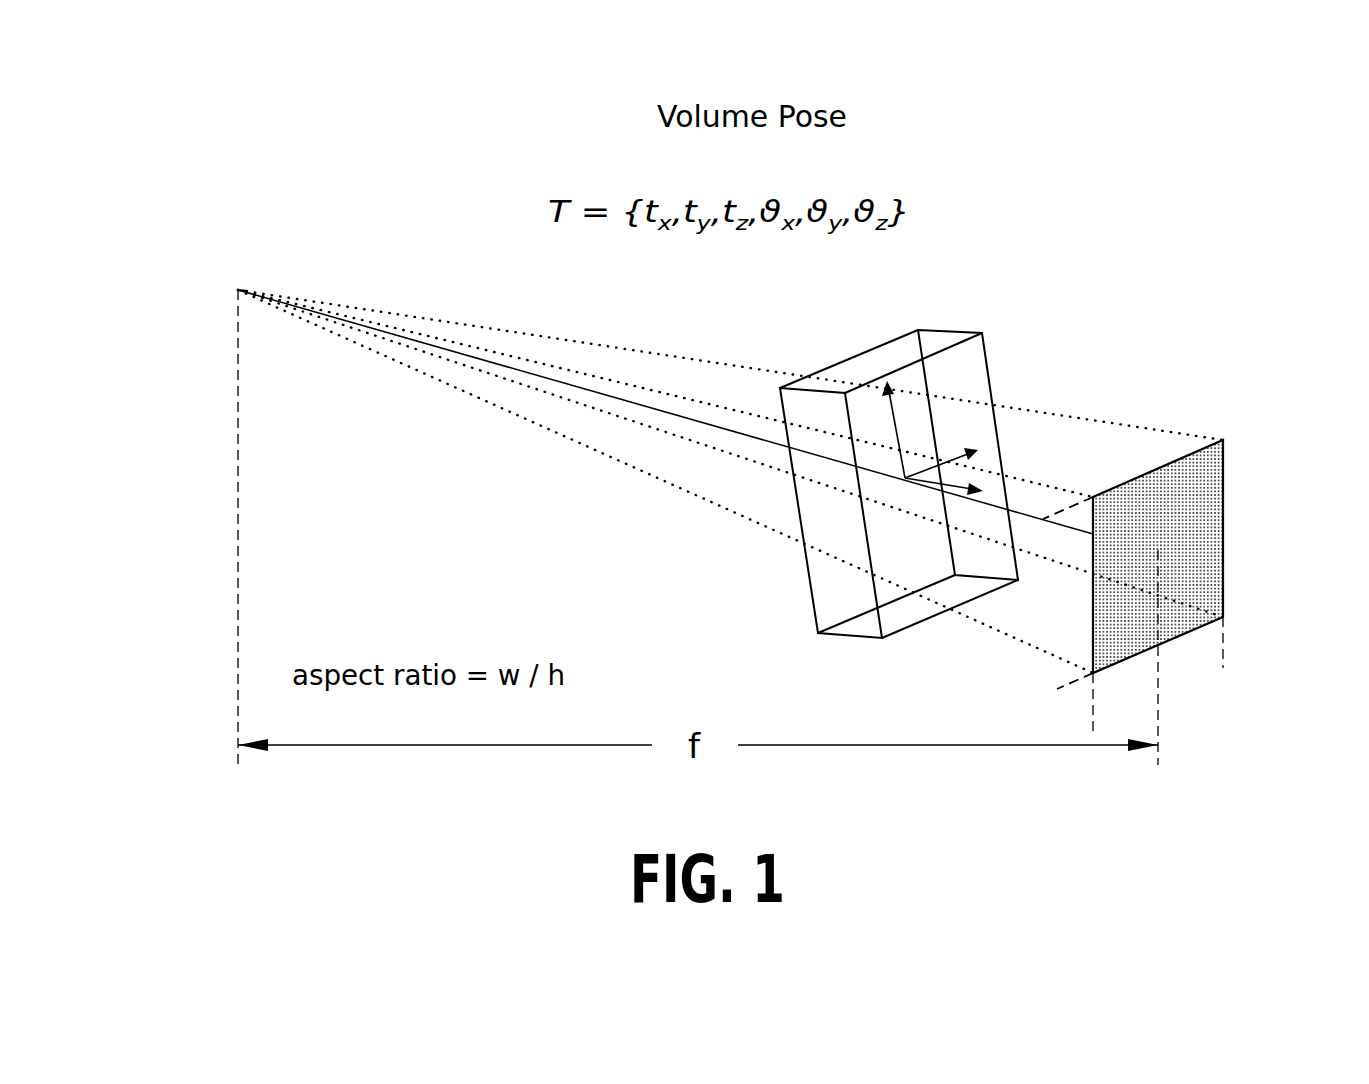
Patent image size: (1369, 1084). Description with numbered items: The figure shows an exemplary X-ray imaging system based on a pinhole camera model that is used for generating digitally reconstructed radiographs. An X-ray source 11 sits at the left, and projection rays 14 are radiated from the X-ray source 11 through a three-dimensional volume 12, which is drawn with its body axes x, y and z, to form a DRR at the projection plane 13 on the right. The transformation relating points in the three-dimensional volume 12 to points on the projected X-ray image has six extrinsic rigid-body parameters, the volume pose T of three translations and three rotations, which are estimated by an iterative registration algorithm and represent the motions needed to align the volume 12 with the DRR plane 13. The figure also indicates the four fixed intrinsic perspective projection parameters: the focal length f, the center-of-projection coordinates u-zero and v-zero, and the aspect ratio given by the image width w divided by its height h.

The X-ray source 11 is at (233, 292).
The 3D volume 12 is at (800, 594).
The projection plane 13 is at (1245, 488).
The projection rays 14 is at (762, 362).